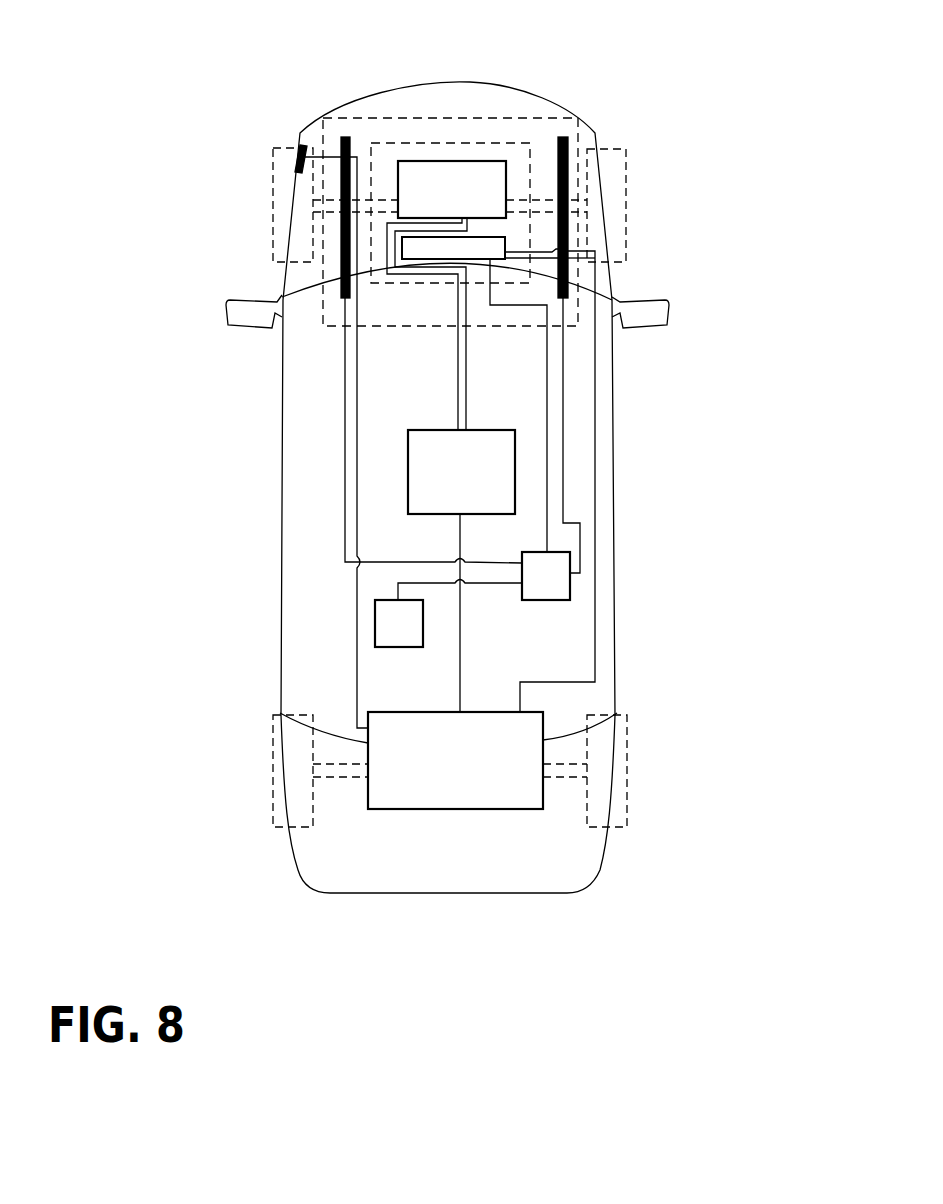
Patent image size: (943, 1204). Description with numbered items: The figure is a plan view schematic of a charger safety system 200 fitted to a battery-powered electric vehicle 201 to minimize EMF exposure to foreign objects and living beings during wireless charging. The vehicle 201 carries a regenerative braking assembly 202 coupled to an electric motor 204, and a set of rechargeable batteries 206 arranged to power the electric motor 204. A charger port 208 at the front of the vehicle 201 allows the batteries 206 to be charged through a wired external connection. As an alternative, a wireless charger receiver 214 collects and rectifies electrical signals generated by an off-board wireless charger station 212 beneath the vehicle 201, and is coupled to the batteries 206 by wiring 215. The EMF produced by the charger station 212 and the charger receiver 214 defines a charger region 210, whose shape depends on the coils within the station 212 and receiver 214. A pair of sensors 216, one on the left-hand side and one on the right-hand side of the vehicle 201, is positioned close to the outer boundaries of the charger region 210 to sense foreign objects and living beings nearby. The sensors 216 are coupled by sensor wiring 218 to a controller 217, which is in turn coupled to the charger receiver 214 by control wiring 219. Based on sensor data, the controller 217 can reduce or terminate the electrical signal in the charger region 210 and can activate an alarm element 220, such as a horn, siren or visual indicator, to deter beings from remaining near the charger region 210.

The charger safety system 200 is at (758, 283).
The battery-powered electric vehicle 201 is at (615, 665).
The regenerative braking assembly 202 is at (440, 205).
The electric motor 204 is at (448, 487).
The batteries 206 is at (453, 777).
The charger port 208 is at (302, 138).
The charger region 210 is at (538, 117).
The wireless charger station 212 is at (480, 142).
The wireless charger receiver 214 is at (505, 252).
The wiring 215 is at (597, 612).
The sensors 216 is at (342, 290).
The controller 217 is at (534, 595).
The sensor wiring 218 is at (345, 470).
The control wiring 219 is at (548, 447).
The alarm element 220 is at (387, 641).